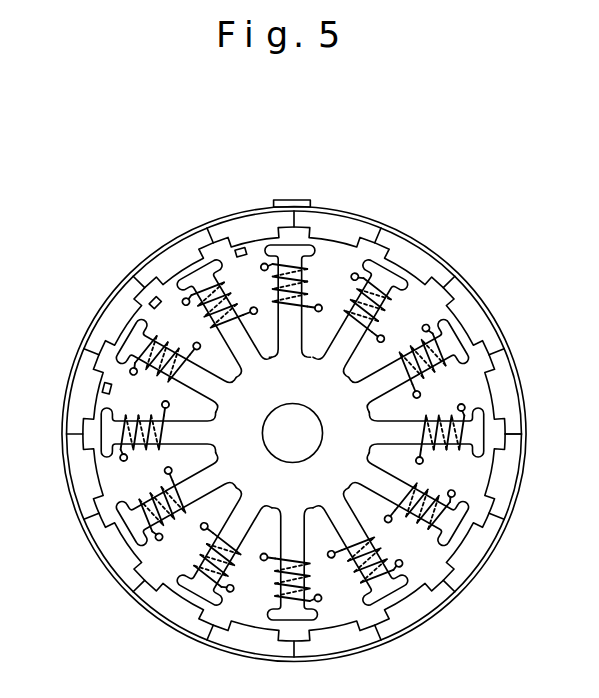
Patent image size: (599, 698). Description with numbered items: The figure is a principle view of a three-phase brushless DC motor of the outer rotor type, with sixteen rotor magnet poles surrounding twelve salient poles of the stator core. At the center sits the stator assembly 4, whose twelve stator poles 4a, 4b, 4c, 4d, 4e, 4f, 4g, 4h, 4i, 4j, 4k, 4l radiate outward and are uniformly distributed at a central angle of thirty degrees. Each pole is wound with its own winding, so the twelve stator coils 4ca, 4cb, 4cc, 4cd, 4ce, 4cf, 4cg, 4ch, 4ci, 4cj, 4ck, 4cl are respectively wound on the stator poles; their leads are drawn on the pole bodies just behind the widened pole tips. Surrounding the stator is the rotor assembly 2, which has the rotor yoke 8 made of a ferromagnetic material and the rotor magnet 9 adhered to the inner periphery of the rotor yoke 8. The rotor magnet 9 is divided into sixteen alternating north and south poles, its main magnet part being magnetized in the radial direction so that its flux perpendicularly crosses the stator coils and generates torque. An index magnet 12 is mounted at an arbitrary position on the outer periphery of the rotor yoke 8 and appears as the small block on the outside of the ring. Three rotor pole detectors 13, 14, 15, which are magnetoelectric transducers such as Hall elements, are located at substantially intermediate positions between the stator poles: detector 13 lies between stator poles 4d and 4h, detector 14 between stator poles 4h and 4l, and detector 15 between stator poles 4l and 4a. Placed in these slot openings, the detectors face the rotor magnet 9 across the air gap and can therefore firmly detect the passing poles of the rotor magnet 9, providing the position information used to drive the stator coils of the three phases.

The rotor assembly 2 is at (505, 547).
The stator assembly 4 is at (331, 481).
The rotor yoke 8 is at (454, 265).
The rotor magnet 9 is at (498, 371).
The index magnet 12 is at (290, 200).
The rotor pole detector 13 is at (105, 388).
The rotor pole detector 14 is at (155, 301).
The rotor pole detector 15 is at (238, 251).
The stator pole 4a is at (290, 301).
The stator pole 4b is at (428, 432).
The stator pole 4c is at (292, 564).
The stator pole 4d is at (157, 432).
The stator pole 4e is at (359, 319).
The stator pole 4f is at (415, 498).
The stator pole 4g is at (225, 546).
The stator pole 4h is at (176, 367).
The stator pole 4i is at (408, 367).
The stator pole 4j is at (359, 546).
The stator pole 4k is at (176, 498).
The stator pole 4l is at (225, 319).
The stator coil 4ca is at (297, 288).
The stator coil 4cb is at (445, 434).
The stator coil 4cc is at (284, 578).
The stator coil 4cd is at (143, 431).
The stator coil 4ce is at (368, 308).
The stator coil 4cf is at (421, 506).
The stator coil 4cg is at (217, 558).
The stator coil 4ch is at (165, 342).
The stator coil 4ci is at (427, 361).
The stator coil 4cj is at (372, 559).
The stator coil 4ck is at (160, 504).
The stator coil 4cl is at (219, 306).